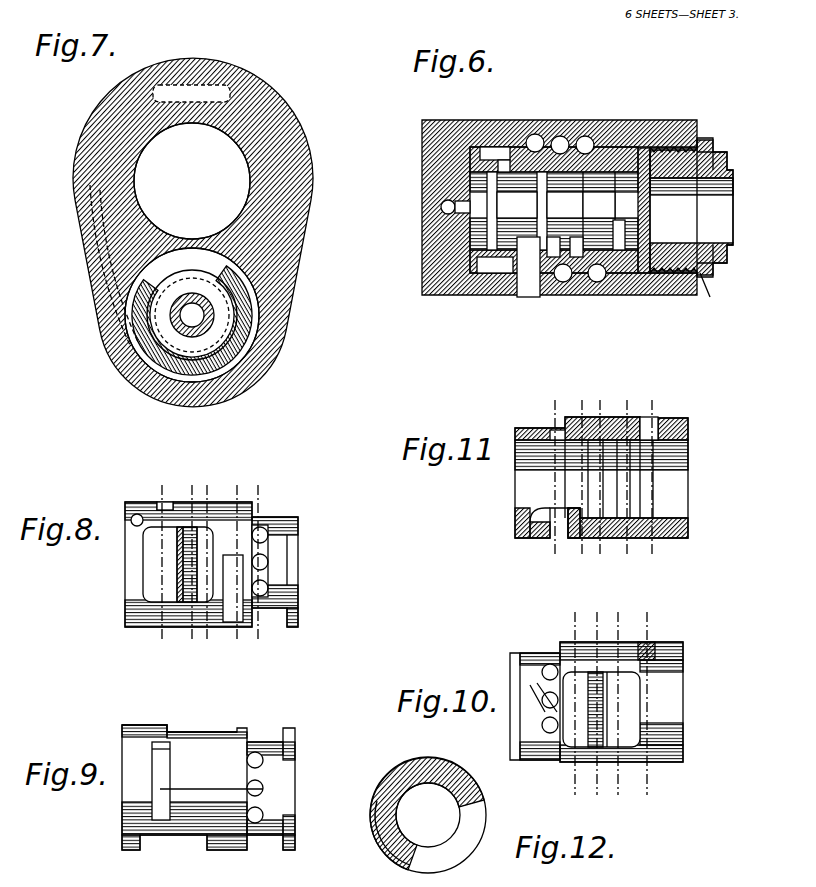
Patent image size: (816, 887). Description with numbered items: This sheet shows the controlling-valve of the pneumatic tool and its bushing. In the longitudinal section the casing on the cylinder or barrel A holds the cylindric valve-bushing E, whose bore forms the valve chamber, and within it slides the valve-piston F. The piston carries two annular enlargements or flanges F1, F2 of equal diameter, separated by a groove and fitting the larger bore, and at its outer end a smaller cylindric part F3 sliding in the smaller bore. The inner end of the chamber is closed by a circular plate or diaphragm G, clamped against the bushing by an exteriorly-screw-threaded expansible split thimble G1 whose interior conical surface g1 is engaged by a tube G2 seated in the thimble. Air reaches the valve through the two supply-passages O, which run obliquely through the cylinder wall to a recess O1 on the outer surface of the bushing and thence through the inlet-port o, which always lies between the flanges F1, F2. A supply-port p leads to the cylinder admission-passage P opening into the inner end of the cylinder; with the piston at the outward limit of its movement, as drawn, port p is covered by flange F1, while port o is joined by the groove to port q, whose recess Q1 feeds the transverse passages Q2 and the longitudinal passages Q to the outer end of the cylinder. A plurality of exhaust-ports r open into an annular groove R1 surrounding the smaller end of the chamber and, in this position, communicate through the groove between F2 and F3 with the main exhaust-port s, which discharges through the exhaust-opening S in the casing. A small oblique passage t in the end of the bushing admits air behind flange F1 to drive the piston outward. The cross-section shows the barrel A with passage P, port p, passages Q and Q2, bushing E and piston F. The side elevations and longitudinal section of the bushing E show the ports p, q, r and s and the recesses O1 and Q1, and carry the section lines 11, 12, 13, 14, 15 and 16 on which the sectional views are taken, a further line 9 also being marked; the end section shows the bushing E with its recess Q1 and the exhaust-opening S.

In FIG. 7, the working cylinder or barrel A is at (287, 366).
In FIG. 6, the working cylinder or barrel A is at (423, 291).
In FIG. 7, the valve-bushing E is at (250, 300).
In FIG. 6, the valve-bushing E is at (633, 141).
In FIG. 11, the valve-bushing E is at (601, 477).
In FIG. 8, the valve-bushing E is at (298, 540).
In FIG. 9, the valve-bushing E is at (208, 787).
In FIG. 12, the valve-bushing E is at (428, 815).
In FIG. 7, the valve-piston F is at (210, 320).
In FIG. 6, the annular enlargement or flange of valve-piston F1 is at (599, 205).
In FIG. 6, the annular enlargement or flange of valve-piston F2 is at (565, 205).
In FIG. 6, the cylindric part of valve-piston F3 is at (517, 205).
In FIG. 6, the circular plate or diaphragm G is at (648, 215).
In FIG. 6, the expansible split thimble G1 is at (697, 290).
In FIG. 6, the tube G2 is at (720, 227).
In FIG. 6, the interior conical surface of thimble g1 is at (705, 278).
In FIG. 6, the supply-passages O is at (560, 282).
In FIG. 6, the recess O1 is at (626, 237).
In FIG. 8, the recess O1 is at (158, 562).
In FIG. 6, the inlet-port o is at (576, 262).
In FIG. 8, the inlet-port o is at (190, 555).
In FIG. 7, the cylinder admission-passage P is at (178, 203).
In FIG. 9, the cylinder admission-passage P is at (163, 768).
In FIG. 7, the supply-port p is at (193, 258).
In FIG. 11, the supply-port p is at (650, 425).
In FIG. 8, the supply-port p is at (157, 502).
In FIG. 10, the supply-port p is at (648, 647).
In FIG. 7, the longitudinal passages Q is at (222, 83).
In FIG. 6, the recess Q1 is at (586, 136).
In FIG. 10, the recess Q1 is at (625, 682).
In FIG. 9, the recess Q1 is at (210, 732).
In FIG. 12, the recess Q1 is at (374, 830).
In FIG. 7, the transverse passages Q2 is at (90, 258).
In FIG. 6, the transverse passages Q2 is at (537, 134).
In FIG. 6, the admission and exhaust port q is at (552, 137).
In FIG. 10, the admission and exhaust port q is at (600, 724).
In FIG. 6, the annular groove or recess R1 is at (490, 147).
In FIG. 6, the exhaust-ports r is at (504, 160).
In FIG. 11, the exhaust-ports r is at (552, 432).
In FIG. 8, the exhaust-ports r is at (262, 550).
In FIG. 10, the exhaust-ports r is at (542, 698).
In FIG. 9, the exhaust-ports r is at (257, 768).
In FIG. 6, the exhaust-opening S is at (527, 265).
In FIG. 11, the exhaust-opening S is at (573, 536).
In FIG. 12, the exhaust-opening S is at (472, 813).
In FIG. 8, the main exhaust-port s is at (233, 588).
In FIG. 8, the small oblique passage t is at (133, 524).
In FIG. 6, the section line 9 is at (652, 297).
In FIG. 9, the section line 11 11 is at (160, 789).
In FIG. 11, the section line 12 12 is at (597, 407).
In FIG. 8, the section line 12 12 is at (255, 488).
In FIG. 10, the section line 12 12 is at (594, 615).
In FIG. 11, the section line 13 13 is at (624, 407).
In FIG. 8, the section line 13 13 is at (234, 488).
In FIG. 10, the section line 13 13 is at (615, 615).
In FIG. 11, the section line 14 14 is at (649, 407).
In FIG. 8, the section line 14 14 is at (204, 488).
In FIG. 10, the section line 14 14 is at (645, 615).
In FIG. 11, the section line 15 15 is at (578, 407).
In FIG. 8, the section line 15 15 is at (278, 488).
In FIG. 11, the section line 16 16 is at (688, 407).
In FIG. 8, the section line 16 16 is at (189, 488).
In FIG. 10, the section line 16 16 is at (668, 605).